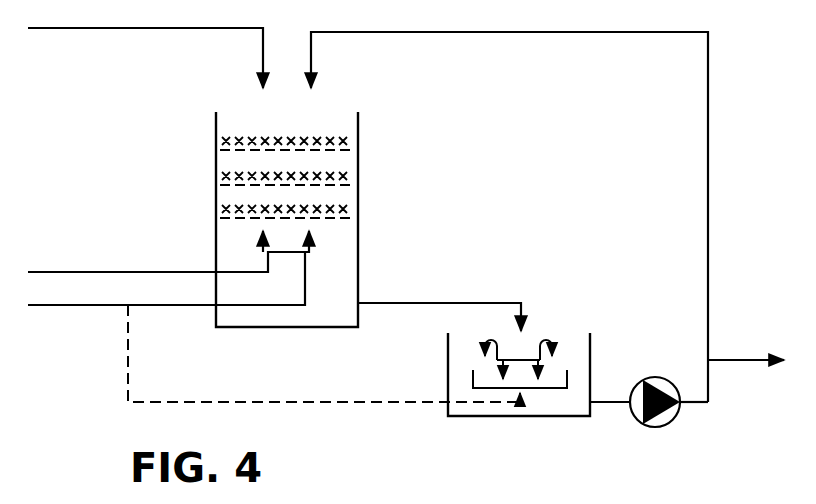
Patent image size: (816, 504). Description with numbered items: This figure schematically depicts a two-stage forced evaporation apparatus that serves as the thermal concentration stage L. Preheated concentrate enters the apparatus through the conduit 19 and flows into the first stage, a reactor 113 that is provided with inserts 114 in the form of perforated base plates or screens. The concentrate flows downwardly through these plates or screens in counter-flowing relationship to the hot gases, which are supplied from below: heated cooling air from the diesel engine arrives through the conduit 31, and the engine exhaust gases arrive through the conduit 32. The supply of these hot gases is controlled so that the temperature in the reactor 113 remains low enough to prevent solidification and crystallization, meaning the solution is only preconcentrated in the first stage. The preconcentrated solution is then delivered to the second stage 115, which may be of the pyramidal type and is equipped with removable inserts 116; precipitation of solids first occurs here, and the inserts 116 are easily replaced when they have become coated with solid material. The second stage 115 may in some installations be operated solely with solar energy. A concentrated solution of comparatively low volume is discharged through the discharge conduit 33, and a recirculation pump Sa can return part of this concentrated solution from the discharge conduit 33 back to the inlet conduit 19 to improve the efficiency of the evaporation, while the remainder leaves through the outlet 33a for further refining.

The conduit 19 is at (148, 28).
The discharge conduit 33 is at (527, 32).
The reactor 113 is at (359, 123).
The inserts 114 is at (333, 178).
The thermal concentration stage L is at (410, 225).
The conduit 31 is at (88, 272).
The conduit 32 is at (94, 306).
The second stage 115 is at (437, 372).
The removable inserts 116 is at (545, 346).
The outlet line 33a is at (772, 360).
The recirculation pump Sa is at (697, 430).